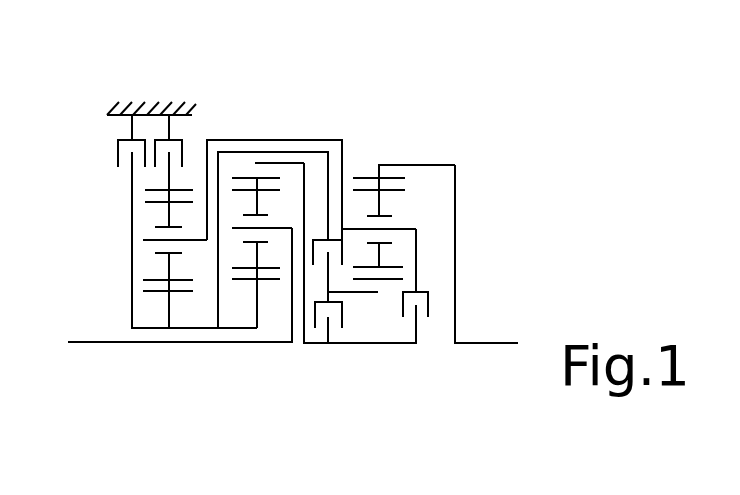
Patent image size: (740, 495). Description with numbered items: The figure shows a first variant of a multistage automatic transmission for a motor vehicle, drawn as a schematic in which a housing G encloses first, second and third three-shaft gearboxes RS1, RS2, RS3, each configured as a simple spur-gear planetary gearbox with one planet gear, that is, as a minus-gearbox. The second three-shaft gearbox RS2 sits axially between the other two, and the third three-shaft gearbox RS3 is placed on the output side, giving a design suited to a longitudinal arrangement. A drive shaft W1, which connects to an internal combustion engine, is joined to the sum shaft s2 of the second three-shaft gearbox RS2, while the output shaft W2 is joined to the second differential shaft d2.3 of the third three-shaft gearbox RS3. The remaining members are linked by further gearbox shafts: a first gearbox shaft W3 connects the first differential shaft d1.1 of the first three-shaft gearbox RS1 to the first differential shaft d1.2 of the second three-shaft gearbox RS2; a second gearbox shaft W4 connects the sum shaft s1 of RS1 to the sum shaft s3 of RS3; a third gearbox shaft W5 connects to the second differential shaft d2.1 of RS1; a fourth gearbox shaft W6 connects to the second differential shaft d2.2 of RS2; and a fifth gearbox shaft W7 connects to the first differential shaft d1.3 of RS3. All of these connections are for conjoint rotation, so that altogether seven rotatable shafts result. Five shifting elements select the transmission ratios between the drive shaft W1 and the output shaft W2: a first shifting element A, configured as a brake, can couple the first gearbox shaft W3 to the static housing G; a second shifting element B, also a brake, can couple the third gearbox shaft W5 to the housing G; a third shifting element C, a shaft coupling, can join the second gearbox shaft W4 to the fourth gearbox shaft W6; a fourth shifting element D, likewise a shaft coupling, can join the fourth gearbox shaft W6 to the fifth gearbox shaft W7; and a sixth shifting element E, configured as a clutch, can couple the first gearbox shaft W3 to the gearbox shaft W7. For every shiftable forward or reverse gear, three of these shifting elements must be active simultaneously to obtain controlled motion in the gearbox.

The housing G is at (117, 105).
The first shifting element A is at (118, 150).
The second shifting element B is at (183, 147).
The third shifting element C is at (425, 291).
The fourth shifting element D is at (340, 314).
The sixth shifting element E is at (322, 238).
The drive shaft W1 is at (105, 342).
The output shaft W2 is at (483, 343).
The first gearbox shaft W3 is at (185, 328).
The second gearbox shaft W4 is at (312, 138).
The third gearbox shaft W5 is at (169, 158).
The fourth gearbox shaft W6 is at (345, 343).
The fifth gearbox shaft W7 is at (370, 292).
The first 3-shaft gearbox RS1 is at (158, 216).
The second 3-shaft gearbox RS2 is at (268, 205).
The third 3-shaft gearbox RS3 is at (388, 205).
The sum shaft of the first 3-shaft gearbox s1 is at (155, 240).
The sum shaft of the second 3-shaft gearbox s2 is at (235, 228).
The sum shaft of the third 3-shaft gearbox s3 is at (400, 227).
The first differential shaft of the first 3-shaft gearbox d1.1 is at (163, 292).
The second differential shaft of the first 3-shaft gearbox d2.1 is at (162, 190).
The first differential shaft of the second 3-shaft gearbox d1.2 is at (257, 285).
The second differential shaft of the second 3-shaft gearbox d2.2 is at (256, 177).
The first differential shaft of the third 3-shaft gearbox d1.3 is at (380, 280).
The second differential shaft of the third 3-shaft gearbox d2.3 is at (378, 177).